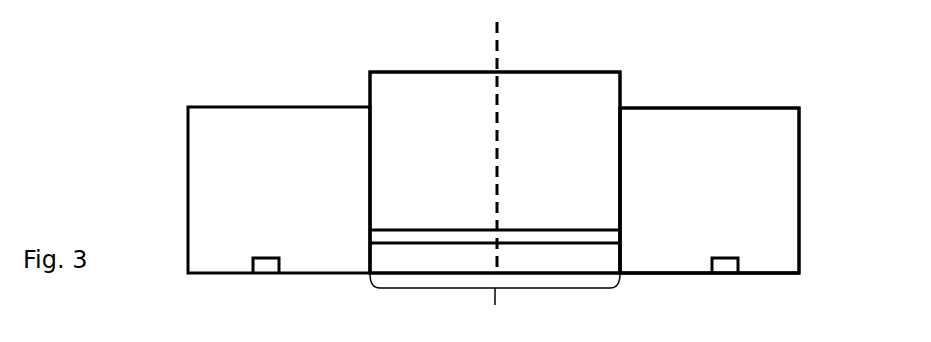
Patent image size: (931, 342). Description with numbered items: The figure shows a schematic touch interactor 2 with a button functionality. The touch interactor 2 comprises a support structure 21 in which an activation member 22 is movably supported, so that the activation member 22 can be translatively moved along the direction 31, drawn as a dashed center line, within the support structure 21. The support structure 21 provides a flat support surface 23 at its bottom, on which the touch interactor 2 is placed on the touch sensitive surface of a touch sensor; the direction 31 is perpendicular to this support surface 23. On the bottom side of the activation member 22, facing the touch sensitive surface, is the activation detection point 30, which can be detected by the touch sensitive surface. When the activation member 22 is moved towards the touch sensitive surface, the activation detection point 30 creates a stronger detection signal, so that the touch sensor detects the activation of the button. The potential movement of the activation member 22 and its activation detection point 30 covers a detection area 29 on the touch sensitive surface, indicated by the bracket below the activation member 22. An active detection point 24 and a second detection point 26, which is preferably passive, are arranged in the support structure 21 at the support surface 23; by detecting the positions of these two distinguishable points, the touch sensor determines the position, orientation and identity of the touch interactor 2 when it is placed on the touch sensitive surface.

The touch interactor 2 is at (106, 148).
The support structure 21 is at (719, 171).
The activation member 22 is at (489, 135).
The support surface 23 is at (770, 273).
The active detection point 24 is at (268, 265).
The second detection point 26 is at (723, 265).
The detection area 29 is at (495, 306).
The activation detection point 30 is at (445, 237).
The direction 31 is at (490, 52).